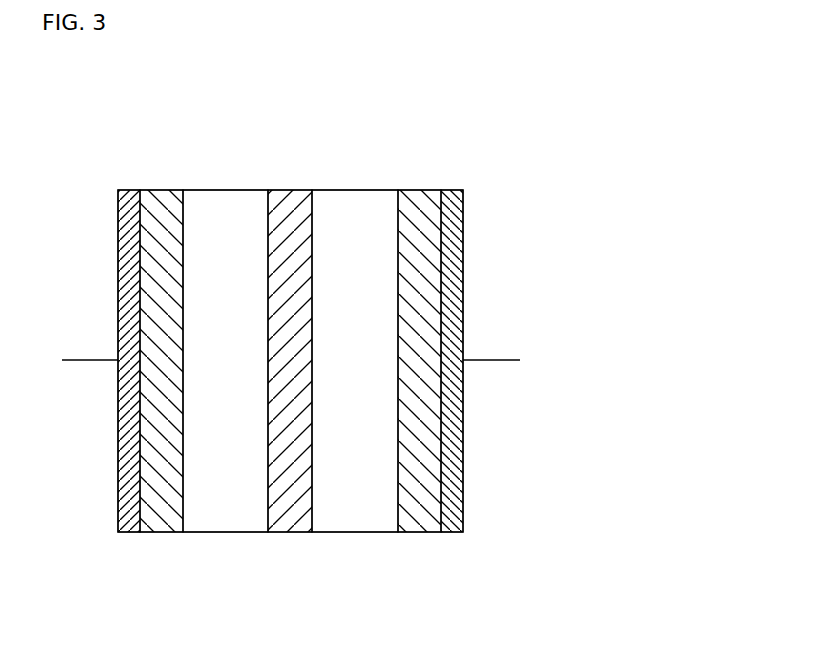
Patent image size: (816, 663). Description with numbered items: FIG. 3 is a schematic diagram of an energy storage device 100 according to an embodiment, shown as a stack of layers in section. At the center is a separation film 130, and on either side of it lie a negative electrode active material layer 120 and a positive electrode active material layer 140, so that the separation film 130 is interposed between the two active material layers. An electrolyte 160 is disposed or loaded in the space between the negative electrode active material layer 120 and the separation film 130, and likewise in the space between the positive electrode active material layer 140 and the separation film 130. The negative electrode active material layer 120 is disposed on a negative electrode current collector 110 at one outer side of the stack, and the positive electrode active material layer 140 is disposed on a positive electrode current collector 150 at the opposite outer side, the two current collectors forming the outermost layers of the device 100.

The battery cell / electrode assembly 100 is at (420, 172).
The negative electrode current collector 110 is at (125, 533).
The negative electrode active material layer 120 is at (163, 533).
The separation film 130 is at (292, 533).
The positive electrode active material layer 140 is at (413, 533).
The positive electrode current collector 150 is at (449, 533).
The electrolyte 160 is at (228, 533).